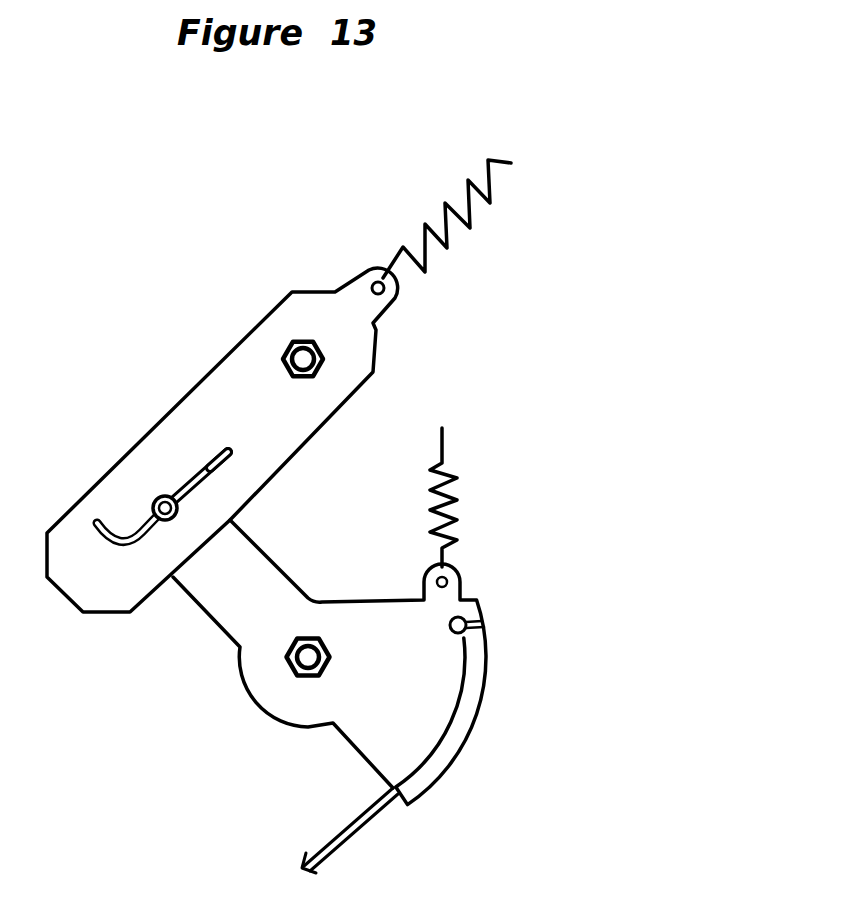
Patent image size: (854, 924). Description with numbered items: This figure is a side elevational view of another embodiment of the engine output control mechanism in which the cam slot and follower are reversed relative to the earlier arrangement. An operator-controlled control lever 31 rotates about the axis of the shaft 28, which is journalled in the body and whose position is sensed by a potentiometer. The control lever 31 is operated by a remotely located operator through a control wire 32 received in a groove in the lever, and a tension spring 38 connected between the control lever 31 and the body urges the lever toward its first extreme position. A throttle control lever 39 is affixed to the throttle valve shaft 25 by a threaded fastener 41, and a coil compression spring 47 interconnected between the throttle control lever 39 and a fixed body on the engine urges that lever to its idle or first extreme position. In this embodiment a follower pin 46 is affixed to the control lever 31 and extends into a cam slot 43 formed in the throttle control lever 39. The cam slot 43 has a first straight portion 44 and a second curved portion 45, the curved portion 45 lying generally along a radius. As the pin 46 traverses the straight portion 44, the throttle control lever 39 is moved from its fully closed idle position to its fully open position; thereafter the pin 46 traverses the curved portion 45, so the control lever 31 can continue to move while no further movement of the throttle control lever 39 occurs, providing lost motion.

The throttle valve shaft 25 is at (302, 341).
The shaft 28 is at (318, 650).
The control lever 31 is at (263, 697).
The control wire 32 is at (373, 817).
The tension spring 38 is at (462, 498).
The throttle control lever 39 is at (215, 375).
The threaded fastener 41 is at (325, 357).
The cam slot 43 is at (207, 480).
The first straight portion 44 is at (198, 468).
The second curved portion 45 is at (133, 540).
The follower pin 46 is at (161, 496).
The coil compression spring 47 is at (448, 247).